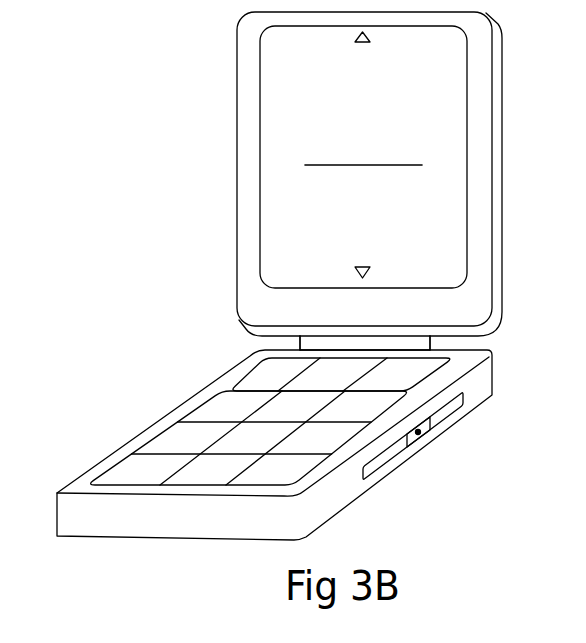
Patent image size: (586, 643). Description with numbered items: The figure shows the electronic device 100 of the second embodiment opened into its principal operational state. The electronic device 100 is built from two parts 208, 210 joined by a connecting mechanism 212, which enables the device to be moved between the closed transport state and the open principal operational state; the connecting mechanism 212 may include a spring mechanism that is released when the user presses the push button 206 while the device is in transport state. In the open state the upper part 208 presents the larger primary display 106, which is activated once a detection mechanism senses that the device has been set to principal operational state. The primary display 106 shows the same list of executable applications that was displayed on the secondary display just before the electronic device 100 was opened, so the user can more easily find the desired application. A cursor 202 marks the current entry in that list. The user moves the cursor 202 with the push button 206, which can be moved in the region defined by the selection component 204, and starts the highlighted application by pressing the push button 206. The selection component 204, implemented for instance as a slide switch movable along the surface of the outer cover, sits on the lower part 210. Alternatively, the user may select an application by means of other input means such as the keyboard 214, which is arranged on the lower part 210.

The electronic device 100 is at (84, 226).
The primary display 106 is at (260, 102).
The cursor 202 is at (313, 168).
The selection component 204 is at (390, 462).
The push button 206 is at (430, 440).
The first part 208 is at (237, 195).
The second part 210 is at (57, 510).
The connecting mechanism 212 is at (303, 340).
The keyboard 214 is at (162, 432).